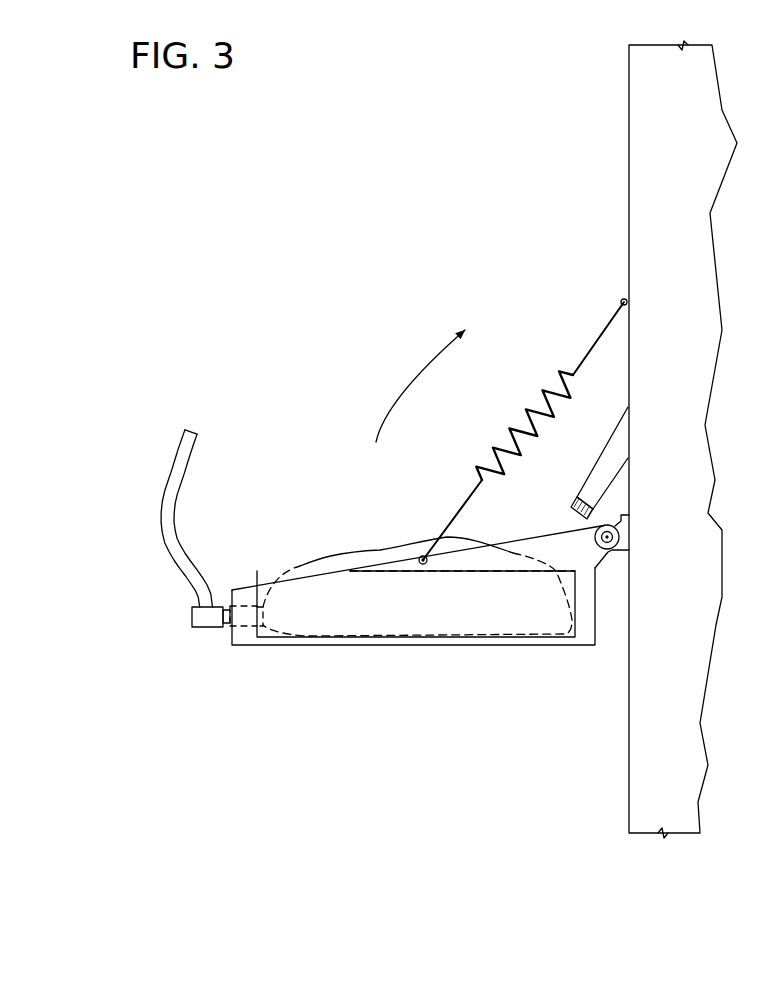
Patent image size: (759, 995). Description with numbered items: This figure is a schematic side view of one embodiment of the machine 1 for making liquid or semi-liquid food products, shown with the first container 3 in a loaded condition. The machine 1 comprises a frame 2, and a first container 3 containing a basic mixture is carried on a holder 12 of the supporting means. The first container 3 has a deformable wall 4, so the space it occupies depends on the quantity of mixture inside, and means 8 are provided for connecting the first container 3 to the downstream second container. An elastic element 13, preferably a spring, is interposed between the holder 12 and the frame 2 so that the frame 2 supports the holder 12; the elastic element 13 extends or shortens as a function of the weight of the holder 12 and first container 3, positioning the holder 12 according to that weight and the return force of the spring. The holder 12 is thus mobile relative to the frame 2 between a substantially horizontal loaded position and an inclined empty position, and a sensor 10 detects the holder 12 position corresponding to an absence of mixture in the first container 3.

The machine 1 is at (365, 237).
The frame 2 is at (628, 128).
The first container 3 is at (336, 548).
The deformable wall 4 is at (395, 540).
The means for connecting 8 is at (165, 472).
The sensor 10 is at (572, 493).
The holder 12 is at (353, 648).
The elastic element 13 is at (538, 373).